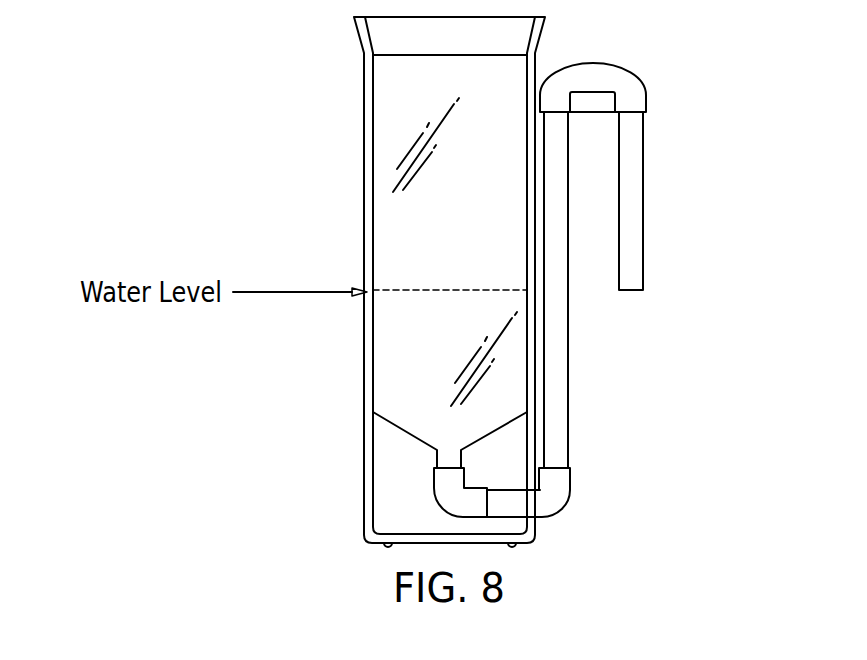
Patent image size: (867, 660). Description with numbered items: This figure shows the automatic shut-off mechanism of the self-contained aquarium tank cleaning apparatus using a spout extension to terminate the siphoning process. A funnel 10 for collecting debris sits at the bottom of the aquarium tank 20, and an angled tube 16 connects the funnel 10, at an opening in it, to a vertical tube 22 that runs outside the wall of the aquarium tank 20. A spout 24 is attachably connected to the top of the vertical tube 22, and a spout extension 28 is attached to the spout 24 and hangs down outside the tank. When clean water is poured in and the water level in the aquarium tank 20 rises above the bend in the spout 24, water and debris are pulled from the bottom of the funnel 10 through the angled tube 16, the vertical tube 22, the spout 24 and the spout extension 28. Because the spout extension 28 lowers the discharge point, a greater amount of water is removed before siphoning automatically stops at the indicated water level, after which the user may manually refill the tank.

The funnel 10 is at (387, 424).
The angled tube 16 is at (433, 490).
The aquarium tank 20 is at (364, 184).
The vertical tube 22 is at (568, 380).
The spout 24 is at (647, 95).
The spout extension 28 is at (643, 222).